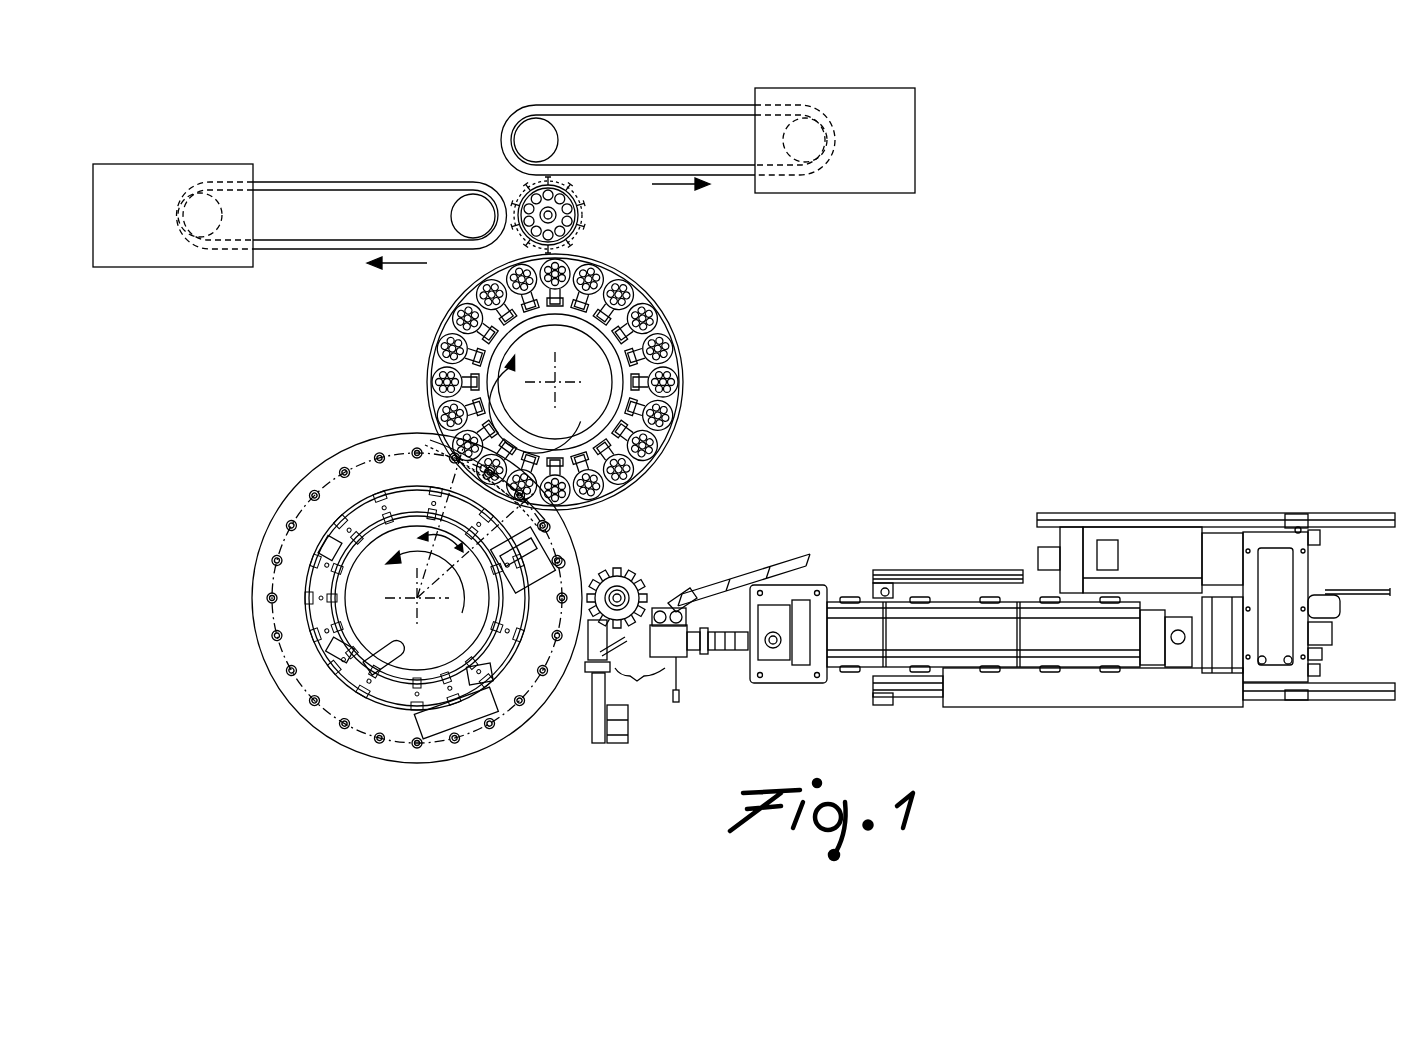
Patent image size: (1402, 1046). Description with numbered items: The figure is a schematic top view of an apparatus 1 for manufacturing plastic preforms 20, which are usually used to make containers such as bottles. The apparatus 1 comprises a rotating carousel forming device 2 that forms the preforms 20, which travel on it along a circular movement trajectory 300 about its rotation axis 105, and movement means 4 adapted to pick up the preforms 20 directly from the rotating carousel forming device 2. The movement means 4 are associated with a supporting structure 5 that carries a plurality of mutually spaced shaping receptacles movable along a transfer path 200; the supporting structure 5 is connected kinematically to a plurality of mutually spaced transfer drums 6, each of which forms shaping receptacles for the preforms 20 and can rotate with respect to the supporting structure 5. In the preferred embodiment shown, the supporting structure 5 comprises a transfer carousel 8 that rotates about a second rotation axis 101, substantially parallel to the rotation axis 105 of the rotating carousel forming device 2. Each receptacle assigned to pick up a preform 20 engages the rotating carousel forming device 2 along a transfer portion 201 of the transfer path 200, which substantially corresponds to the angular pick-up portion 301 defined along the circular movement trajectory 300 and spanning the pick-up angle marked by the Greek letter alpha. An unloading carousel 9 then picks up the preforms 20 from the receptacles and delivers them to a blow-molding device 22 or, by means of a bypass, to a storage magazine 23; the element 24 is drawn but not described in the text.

The apparatus 1 is at (844, 320).
The rotating carousel forming device 2 is at (272, 700).
The movement means 4 is at (702, 400).
The supporting structure 5 is at (685, 364).
The transfer drums 6 is at (616, 266).
The transfer carousel 8 is at (597, 337).
The unloading carousel 9 is at (523, 187).
The plastic preforms 20 is at (560, 563).
The blow-molding device 22 is at (905, 157).
The storage magazine 23 is at (348, 184).
The collecting unit 24 is at (148, 176).
The second rotation axis 101 is at (555, 382).
The rotation axis of the rotating carousel forming device 105 is at (413, 596).
The transfer path 200 is at (426, 323).
The transfer portion 201 is at (415, 431).
The circular movement trajectory 300 is at (280, 535).
The angular pick-up portion 301 is at (438, 479).